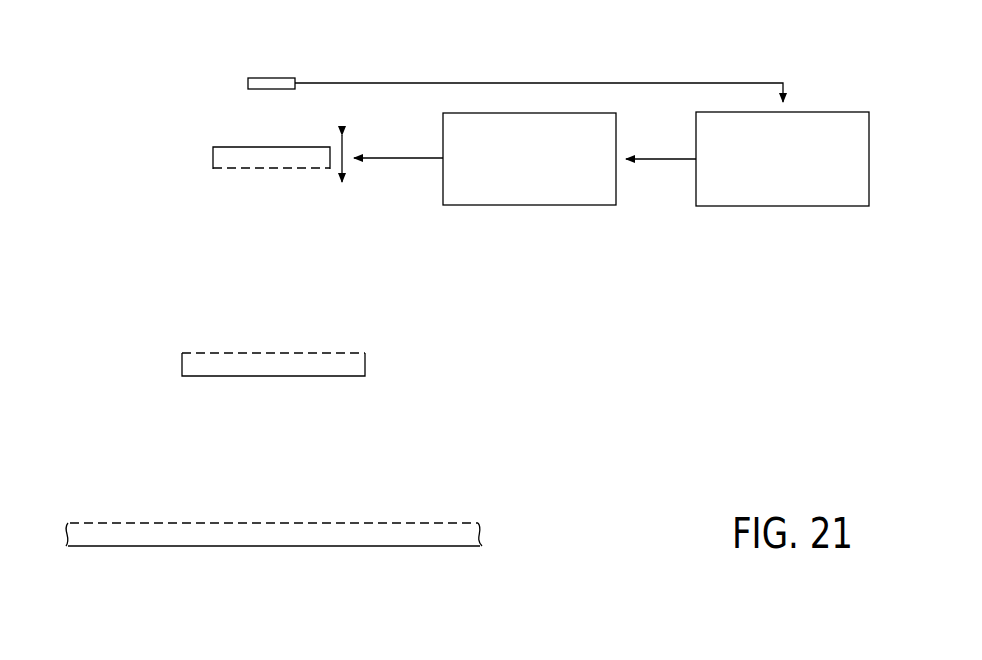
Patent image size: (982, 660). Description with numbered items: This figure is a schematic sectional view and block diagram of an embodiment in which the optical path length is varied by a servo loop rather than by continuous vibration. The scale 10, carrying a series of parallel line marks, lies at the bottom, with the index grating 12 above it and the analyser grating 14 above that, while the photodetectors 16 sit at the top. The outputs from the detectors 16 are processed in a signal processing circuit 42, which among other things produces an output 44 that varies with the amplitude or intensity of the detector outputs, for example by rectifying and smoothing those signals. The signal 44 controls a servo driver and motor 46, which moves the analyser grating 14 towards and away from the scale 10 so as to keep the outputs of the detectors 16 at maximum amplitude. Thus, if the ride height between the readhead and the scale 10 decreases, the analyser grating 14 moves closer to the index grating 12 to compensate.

The scale 10 is at (110, 523).
The index grating 12 is at (182, 363).
The analyser grating 14 is at (213, 157).
The photodetectors 16 is at (248, 82).
The signal processing circuit 42 is at (822, 206).
The output signal 44 is at (655, 159).
The servo driver and motor 46 is at (510, 205).